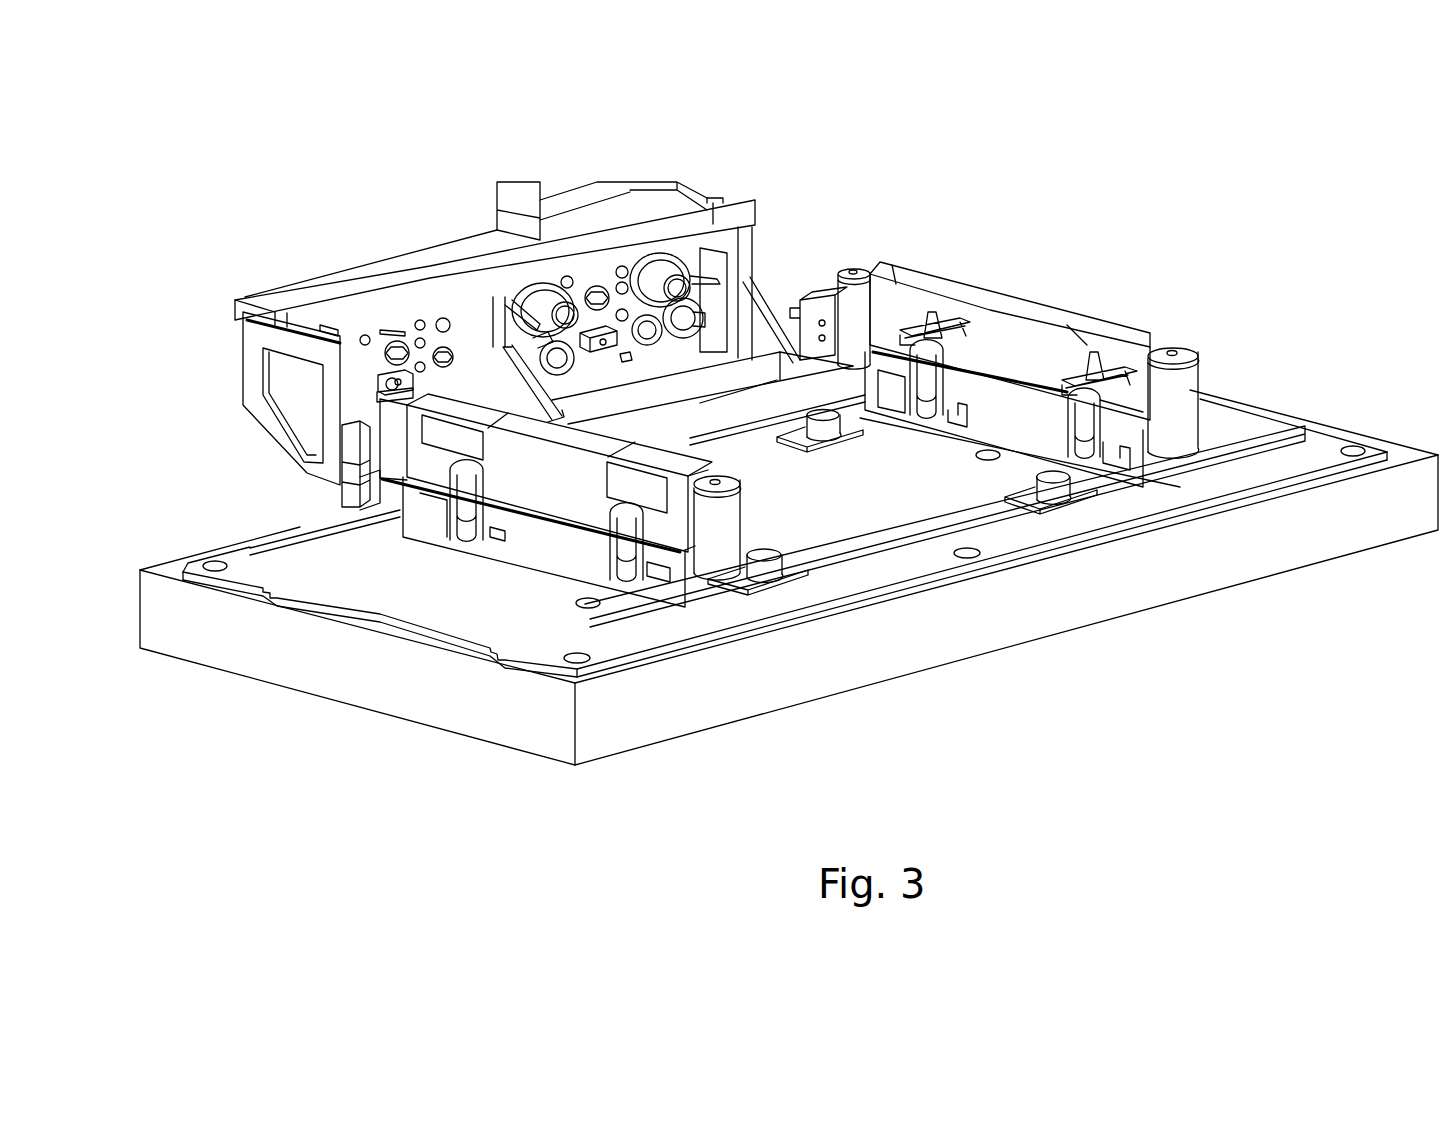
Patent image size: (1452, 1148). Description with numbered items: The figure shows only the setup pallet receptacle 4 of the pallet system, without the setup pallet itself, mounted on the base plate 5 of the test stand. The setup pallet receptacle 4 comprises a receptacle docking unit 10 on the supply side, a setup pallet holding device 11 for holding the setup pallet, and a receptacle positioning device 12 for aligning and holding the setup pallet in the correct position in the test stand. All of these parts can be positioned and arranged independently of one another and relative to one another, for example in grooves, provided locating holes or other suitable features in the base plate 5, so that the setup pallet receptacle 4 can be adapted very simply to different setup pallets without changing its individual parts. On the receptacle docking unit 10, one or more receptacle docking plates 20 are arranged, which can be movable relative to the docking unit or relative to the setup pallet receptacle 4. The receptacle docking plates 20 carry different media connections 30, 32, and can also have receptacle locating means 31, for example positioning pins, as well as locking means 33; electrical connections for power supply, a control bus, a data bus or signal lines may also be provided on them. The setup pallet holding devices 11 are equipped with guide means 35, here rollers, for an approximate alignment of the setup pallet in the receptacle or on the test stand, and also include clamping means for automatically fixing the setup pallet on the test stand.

The setup pallet receptacle 4 is at (735, 190).
The base plate 5 is at (1272, 542).
The receptacle docking unit 10 is at (232, 414).
The setup pallet holding device 11 is at (1047, 299).
The receptacle positioning device 12 is at (762, 558).
The receptacle docking plate 20 is at (385, 378).
The media connection 30 is at (565, 290).
The receptacle locating means 31 is at (330, 330).
The media connection 32 is at (442, 352).
The locking means 33 is at (390, 382).
The guide means 35 is at (1185, 410).